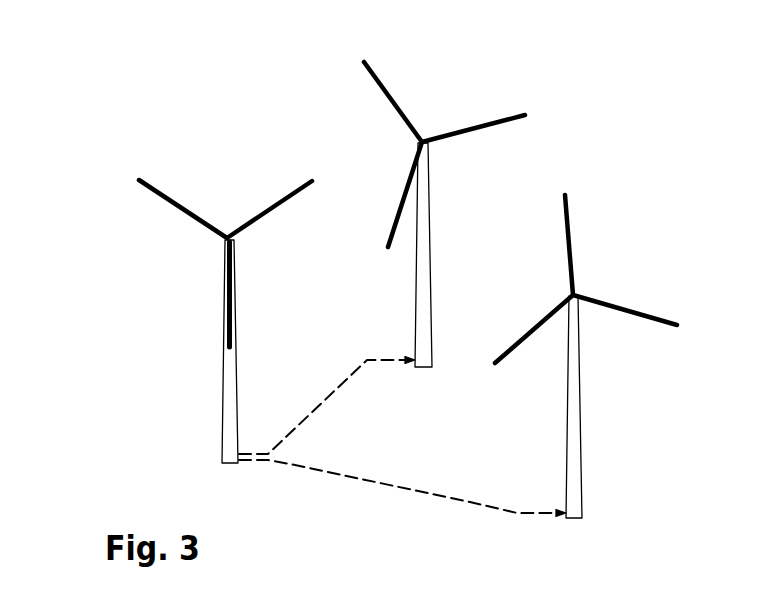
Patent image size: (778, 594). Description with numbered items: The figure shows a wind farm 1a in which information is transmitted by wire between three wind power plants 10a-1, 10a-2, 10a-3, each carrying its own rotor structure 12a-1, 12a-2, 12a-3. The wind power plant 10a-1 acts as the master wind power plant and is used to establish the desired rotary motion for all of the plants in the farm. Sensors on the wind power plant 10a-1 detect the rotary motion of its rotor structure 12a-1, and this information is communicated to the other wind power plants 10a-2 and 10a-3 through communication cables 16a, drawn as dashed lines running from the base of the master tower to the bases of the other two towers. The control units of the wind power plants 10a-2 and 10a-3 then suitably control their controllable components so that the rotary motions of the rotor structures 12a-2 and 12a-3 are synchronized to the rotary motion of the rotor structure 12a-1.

The wind farm 1a is at (96, 90).
The wind power plant 10a-1 is at (194, 418).
The wind power plant 10a-2 is at (390, 296).
The wind power plant 10a-3 is at (548, 439).
The rotor structure 12a-1 is at (215, 204).
The rotor structure 12a-2 is at (427, 110).
The rotor structure 12a-3 is at (604, 280).
The communication cables 16a is at (357, 401).